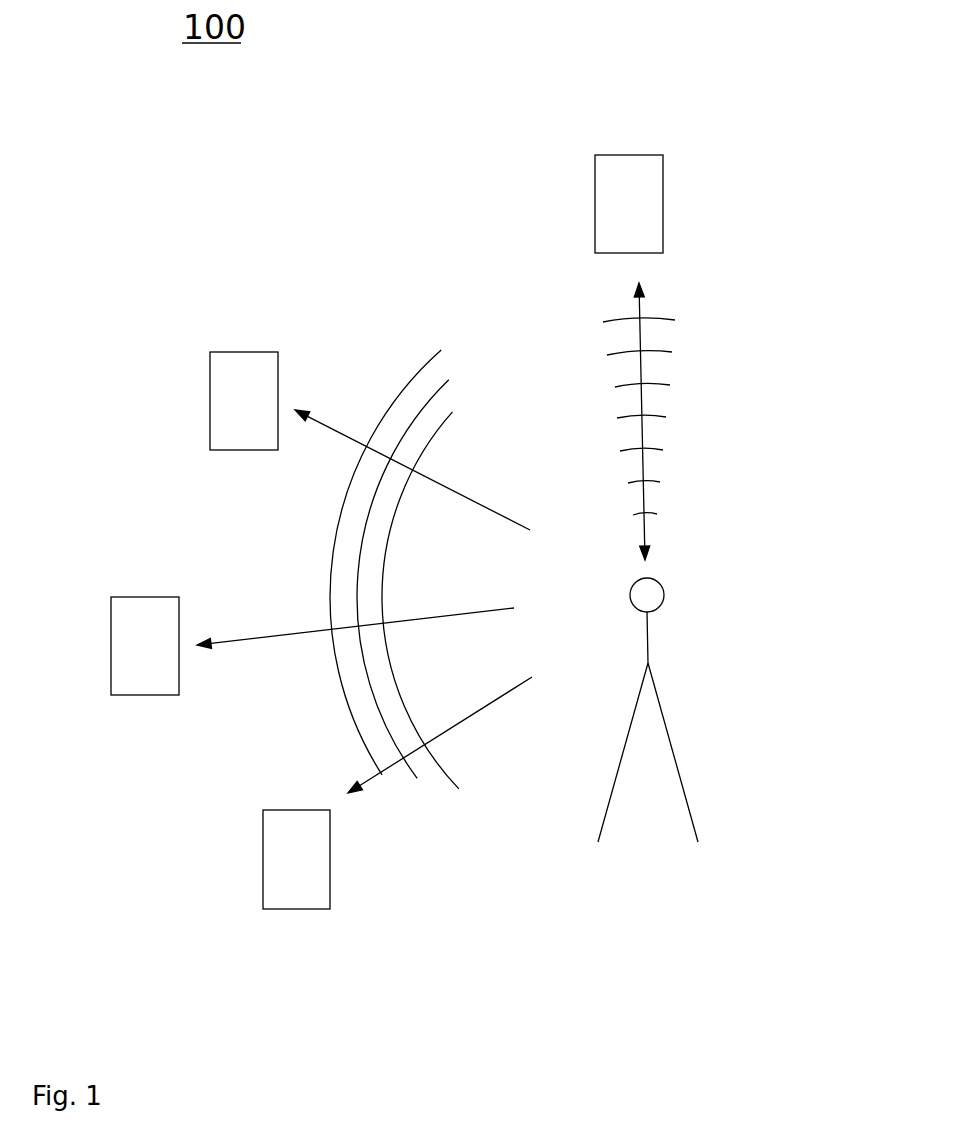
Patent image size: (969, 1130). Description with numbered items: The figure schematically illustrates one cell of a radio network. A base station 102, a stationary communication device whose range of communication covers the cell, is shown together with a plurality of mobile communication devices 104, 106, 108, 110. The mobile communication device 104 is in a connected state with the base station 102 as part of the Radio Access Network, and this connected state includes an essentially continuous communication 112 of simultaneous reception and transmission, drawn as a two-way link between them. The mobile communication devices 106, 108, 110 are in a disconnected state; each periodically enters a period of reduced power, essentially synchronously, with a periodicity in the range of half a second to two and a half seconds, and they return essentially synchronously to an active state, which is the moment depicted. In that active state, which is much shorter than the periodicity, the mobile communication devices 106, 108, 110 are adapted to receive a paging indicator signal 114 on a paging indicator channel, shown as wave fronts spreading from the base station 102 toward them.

The base station 102 is at (658, 635).
The mobile communication device 104 is at (633, 187).
The mobile communication device 106 is at (227, 377).
The mobile communication device 108 is at (133, 623).
The mobile communication device 110 is at (280, 843).
The continuous communication 112 is at (657, 432).
The paging indicator signal 114 is at (440, 775).